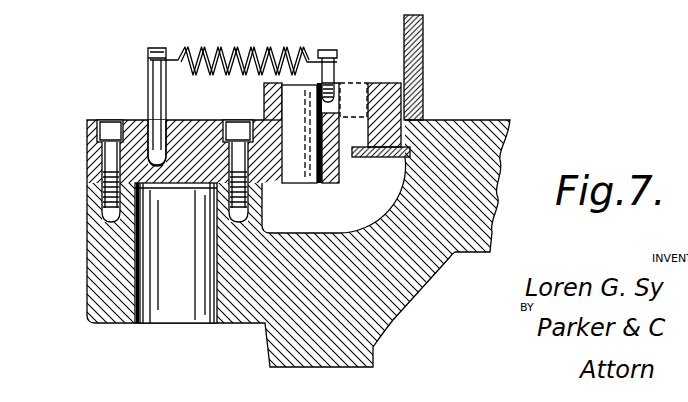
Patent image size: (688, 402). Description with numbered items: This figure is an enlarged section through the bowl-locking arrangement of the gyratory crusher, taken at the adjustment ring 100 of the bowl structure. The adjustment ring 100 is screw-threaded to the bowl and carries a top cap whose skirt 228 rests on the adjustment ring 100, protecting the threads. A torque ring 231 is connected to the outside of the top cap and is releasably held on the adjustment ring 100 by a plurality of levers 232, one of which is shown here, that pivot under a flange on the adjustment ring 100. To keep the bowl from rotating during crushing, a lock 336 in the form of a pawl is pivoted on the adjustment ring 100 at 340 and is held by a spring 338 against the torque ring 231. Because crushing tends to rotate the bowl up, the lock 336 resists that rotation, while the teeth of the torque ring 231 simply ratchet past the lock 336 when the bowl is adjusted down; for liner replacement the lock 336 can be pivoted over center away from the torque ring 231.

The adjustment ring 100 is at (100, 261).
The skirt 228 is at (414, 66).
The torque ring 231 is at (365, 100).
The lever 232 is at (390, 158).
The lock 336 is at (263, 100).
The spring 338 is at (245, 52).
The pivot 340 is at (303, 172).